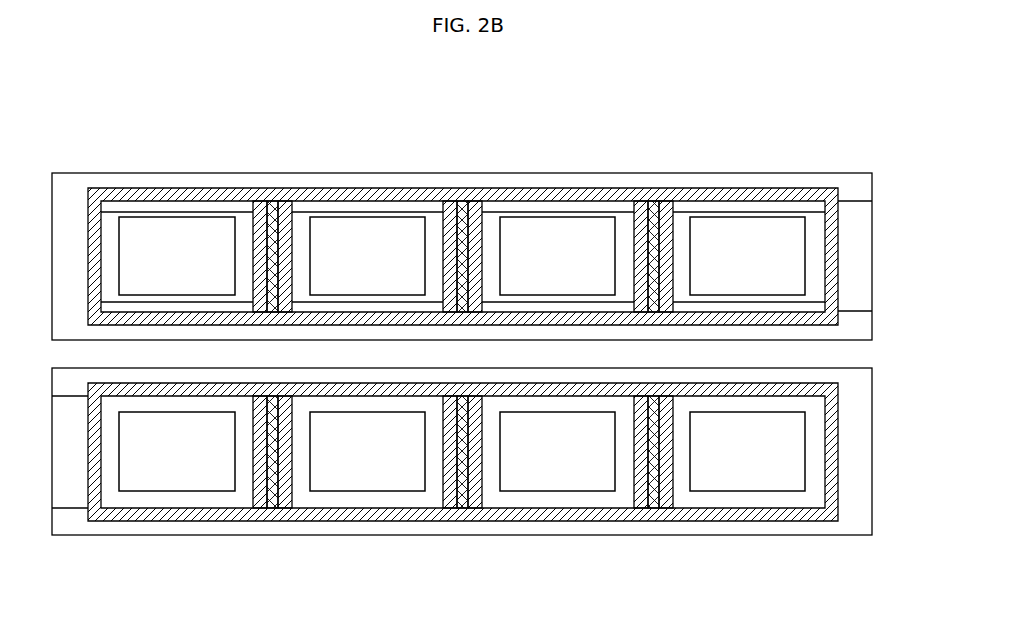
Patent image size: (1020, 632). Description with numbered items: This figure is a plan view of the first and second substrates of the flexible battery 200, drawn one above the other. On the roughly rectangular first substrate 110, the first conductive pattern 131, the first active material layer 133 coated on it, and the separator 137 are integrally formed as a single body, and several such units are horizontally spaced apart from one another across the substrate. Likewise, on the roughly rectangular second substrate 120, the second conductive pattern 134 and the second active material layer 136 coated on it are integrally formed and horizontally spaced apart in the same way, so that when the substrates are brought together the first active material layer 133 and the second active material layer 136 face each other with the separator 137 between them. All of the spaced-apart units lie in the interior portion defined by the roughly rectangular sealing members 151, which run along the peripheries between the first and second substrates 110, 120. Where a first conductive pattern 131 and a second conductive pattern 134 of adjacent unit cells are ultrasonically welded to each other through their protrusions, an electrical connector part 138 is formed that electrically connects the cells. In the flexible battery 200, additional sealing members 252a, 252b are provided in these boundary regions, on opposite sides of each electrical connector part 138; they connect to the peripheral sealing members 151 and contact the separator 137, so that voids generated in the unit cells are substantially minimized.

The flexible battery 200 is at (900, 138).
The first substrate 110 is at (863, 184).
The second substrate 120 is at (865, 464).
The first conductive pattern 131 is at (114, 198).
The first active material layer 133 is at (152, 226).
The separator 137 is at (170, 212).
The second conductive pattern 134 is at (131, 502).
The second active material layer 136 is at (193, 478).
The electrical connector part 138 is at (274, 200).
The sealing member 252a is at (262, 199).
The sealing member 252b is at (296, 200).
The sealing member 151 is at (838, 293).